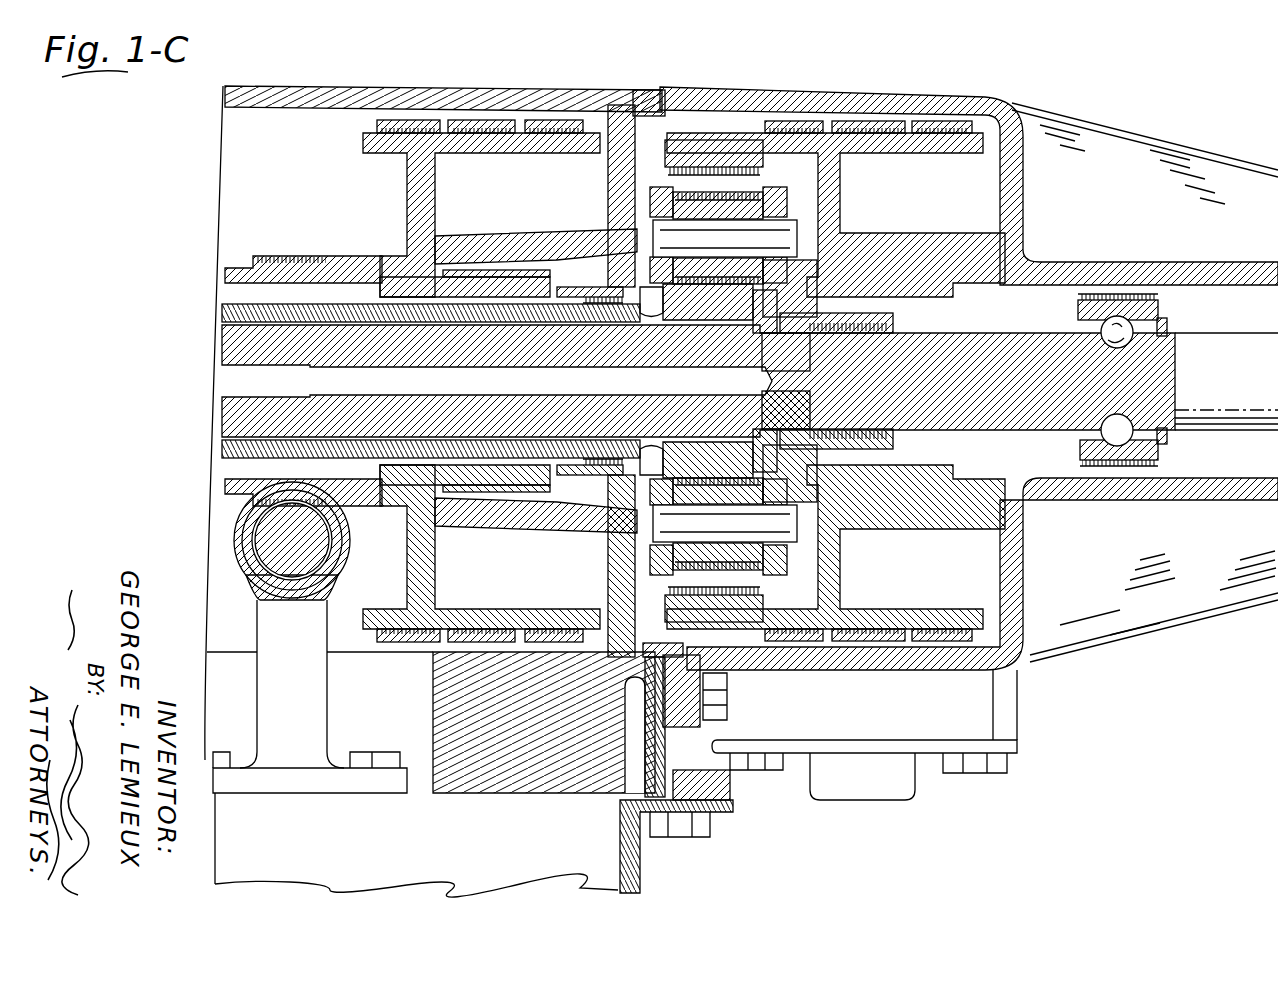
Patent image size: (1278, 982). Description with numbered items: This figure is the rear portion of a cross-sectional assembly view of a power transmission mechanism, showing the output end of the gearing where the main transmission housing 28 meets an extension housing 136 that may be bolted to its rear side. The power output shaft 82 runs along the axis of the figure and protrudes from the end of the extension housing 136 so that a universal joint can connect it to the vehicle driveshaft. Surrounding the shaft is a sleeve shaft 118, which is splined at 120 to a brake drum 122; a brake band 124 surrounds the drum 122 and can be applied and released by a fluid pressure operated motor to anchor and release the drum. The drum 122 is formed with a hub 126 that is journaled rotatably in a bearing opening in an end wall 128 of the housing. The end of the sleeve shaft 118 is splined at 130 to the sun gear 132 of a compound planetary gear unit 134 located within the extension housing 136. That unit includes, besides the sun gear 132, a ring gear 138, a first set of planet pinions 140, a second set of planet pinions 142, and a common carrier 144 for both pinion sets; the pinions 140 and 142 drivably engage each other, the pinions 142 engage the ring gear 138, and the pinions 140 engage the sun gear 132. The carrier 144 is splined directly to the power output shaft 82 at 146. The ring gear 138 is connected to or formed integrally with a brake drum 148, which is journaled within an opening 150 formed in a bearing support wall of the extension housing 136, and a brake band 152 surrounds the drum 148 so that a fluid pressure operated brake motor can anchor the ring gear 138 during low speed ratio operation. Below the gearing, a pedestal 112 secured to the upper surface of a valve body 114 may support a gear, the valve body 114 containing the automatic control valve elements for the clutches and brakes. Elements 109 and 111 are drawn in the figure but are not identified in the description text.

The main transmission housing 28 is at (316, 92).
The power output shaft 82 is at (222, 424).
The gear 109 is at (342, 262).
The spherical bearing 111 is at (249, 516).
The pedestal 112 is at (320, 684).
The valve body 114 is at (632, 862).
The sleeve shaft 118 is at (222, 312).
The spline 120 is at (470, 300).
The brake drum 122 is at (465, 137).
The brake band 124 is at (540, 128).
The hub 126 is at (515, 502).
The end wall 128 is at (515, 245).
The spline 130 is at (590, 303).
The sun gear 132 is at (700, 300).
The compound planetary gear unit 134 is at (718, 188).
The extension housing 136 is at (922, 104).
The ring gear 138 is at (697, 147).
The first set of planet pinions 140 is at (790, 210).
The second set of planet pinions 142 is at (760, 585).
The common carrier 144 is at (800, 333).
The spline 146 is at (888, 335).
The brake drum 148 is at (1017, 130).
The opening 150 is at (910, 265).
The brake band 152 is at (950, 123).